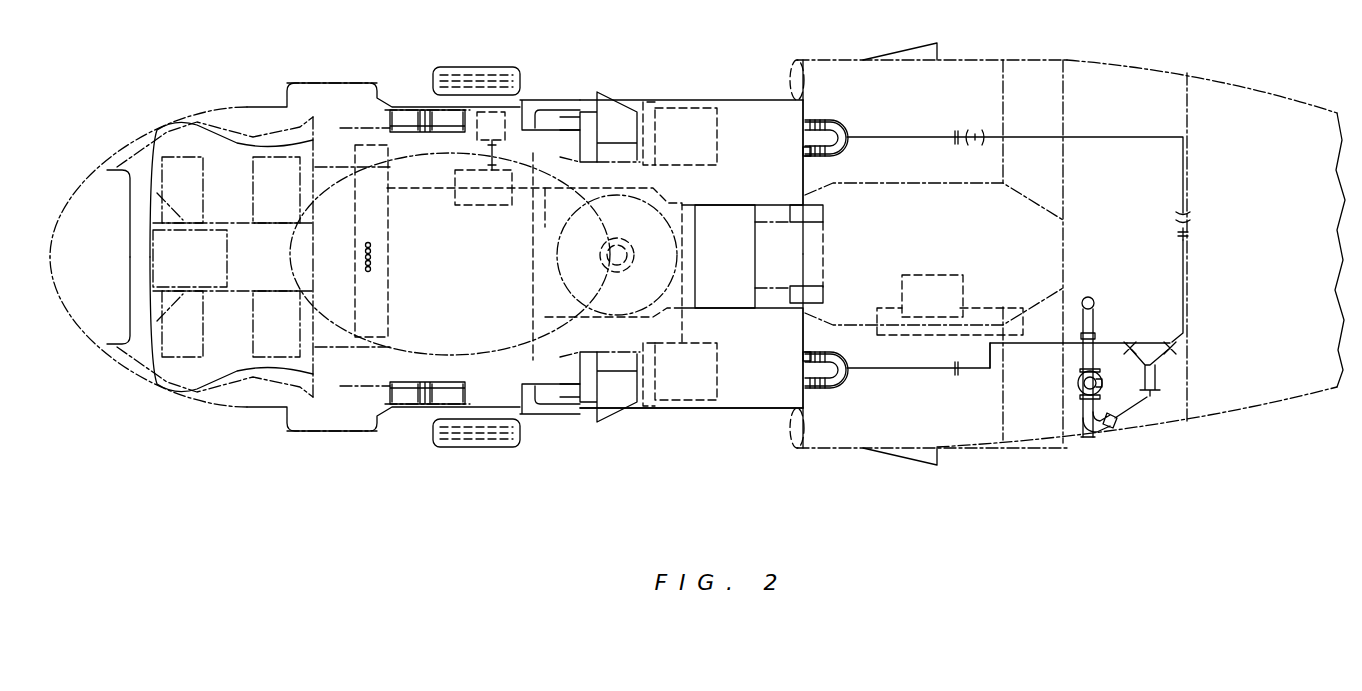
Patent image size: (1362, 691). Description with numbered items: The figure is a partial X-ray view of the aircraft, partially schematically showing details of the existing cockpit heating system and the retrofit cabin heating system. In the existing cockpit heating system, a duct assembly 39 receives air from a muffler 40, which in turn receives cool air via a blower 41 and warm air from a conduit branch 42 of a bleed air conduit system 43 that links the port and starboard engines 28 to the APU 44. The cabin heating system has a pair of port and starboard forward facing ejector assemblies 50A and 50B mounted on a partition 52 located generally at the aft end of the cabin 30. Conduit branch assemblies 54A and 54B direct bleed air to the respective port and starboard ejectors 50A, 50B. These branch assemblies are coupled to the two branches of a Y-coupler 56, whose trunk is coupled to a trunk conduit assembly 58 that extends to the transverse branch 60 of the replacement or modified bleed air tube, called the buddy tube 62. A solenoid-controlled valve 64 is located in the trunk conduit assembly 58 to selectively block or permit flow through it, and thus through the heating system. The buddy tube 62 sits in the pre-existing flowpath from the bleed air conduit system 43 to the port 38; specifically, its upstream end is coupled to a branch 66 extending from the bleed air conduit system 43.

The port and starboard engines 28 is at (663, 100).
The cabin 30 is at (765, 408).
The port 38 is at (1087, 441).
The duct assembly 39 is at (390, 260).
The muffler 40 is at (480, 207).
The blower 41 is at (508, 120).
The conduit branch 42 is at (536, 214).
The bleed air conduit system 43 is at (730, 313).
The APU 44 is at (943, 277).
The port forward facing ejector assembly 50A is at (848, 392).
The starboard forward facing ejector assembly 50B is at (853, 126).
The partition 52 is at (797, 178).
The conduit branch assembly 54A is at (907, 373).
The conduit branch assembly 54B is at (915, 135).
The Y-coupler 56 is at (1160, 370).
The trunk conduit assembly 58 is at (1116, 430).
The transverse branch 60 is at (1096, 326).
The buddy tube 62 is at (1100, 300).
The solenoid-controlled valve 64 is at (1075, 393).
The branch 66 is at (1003, 372).